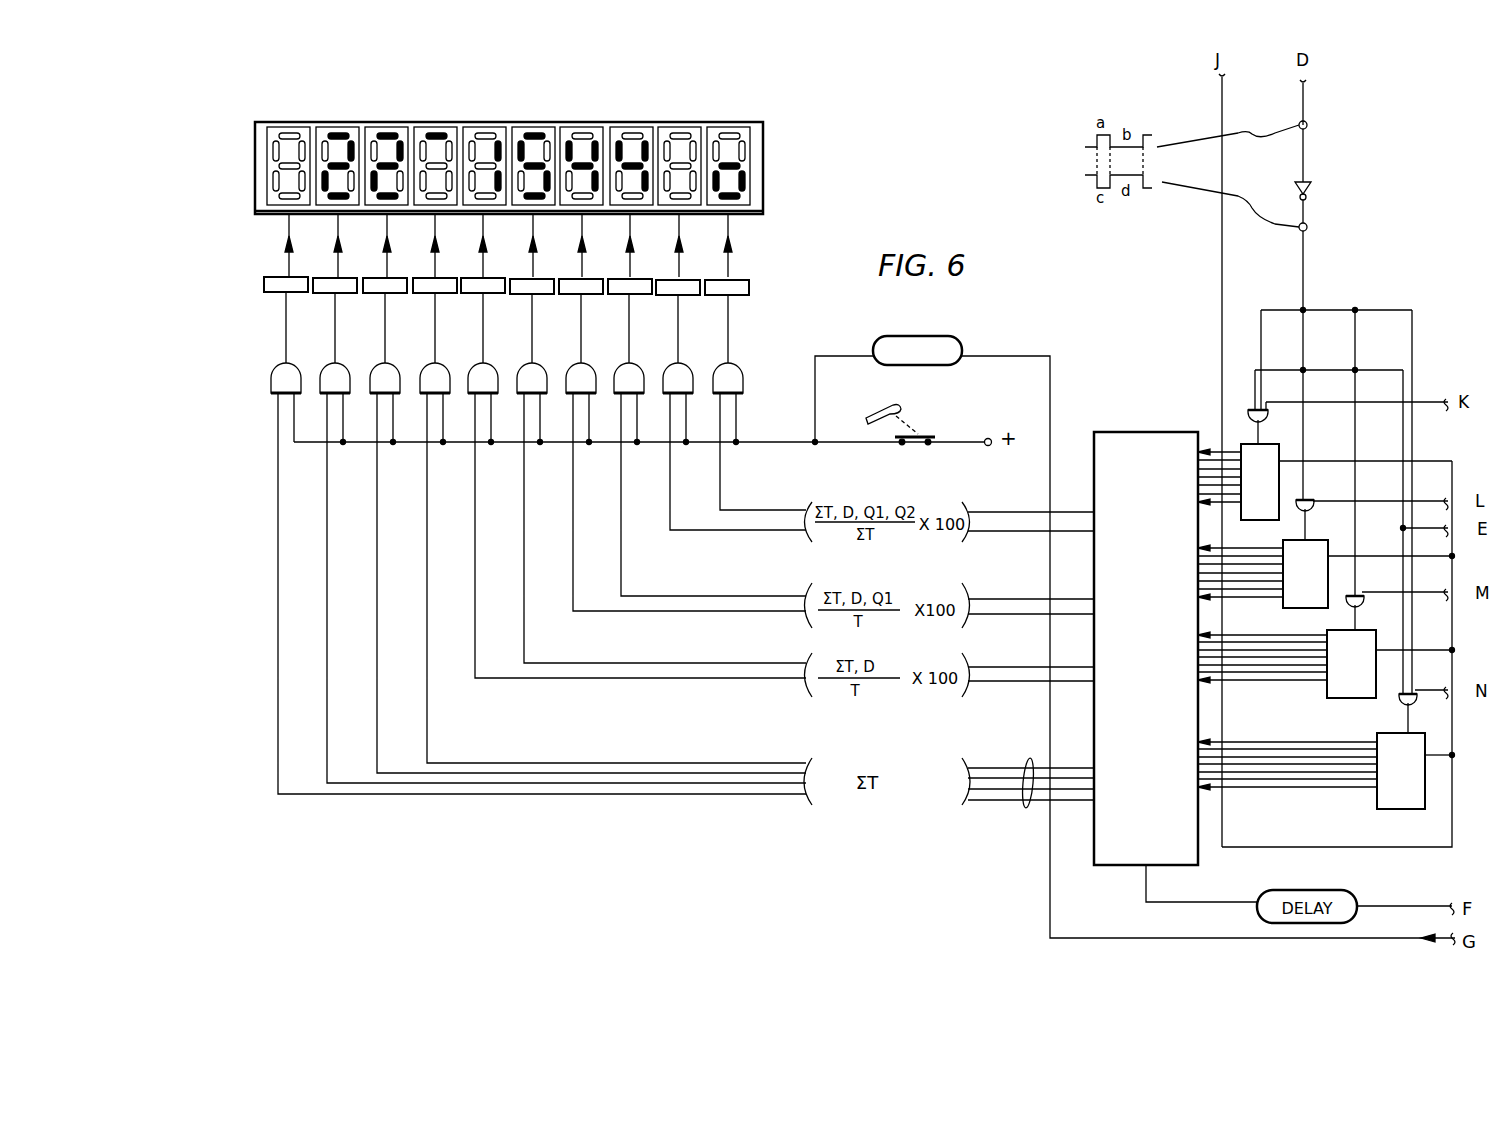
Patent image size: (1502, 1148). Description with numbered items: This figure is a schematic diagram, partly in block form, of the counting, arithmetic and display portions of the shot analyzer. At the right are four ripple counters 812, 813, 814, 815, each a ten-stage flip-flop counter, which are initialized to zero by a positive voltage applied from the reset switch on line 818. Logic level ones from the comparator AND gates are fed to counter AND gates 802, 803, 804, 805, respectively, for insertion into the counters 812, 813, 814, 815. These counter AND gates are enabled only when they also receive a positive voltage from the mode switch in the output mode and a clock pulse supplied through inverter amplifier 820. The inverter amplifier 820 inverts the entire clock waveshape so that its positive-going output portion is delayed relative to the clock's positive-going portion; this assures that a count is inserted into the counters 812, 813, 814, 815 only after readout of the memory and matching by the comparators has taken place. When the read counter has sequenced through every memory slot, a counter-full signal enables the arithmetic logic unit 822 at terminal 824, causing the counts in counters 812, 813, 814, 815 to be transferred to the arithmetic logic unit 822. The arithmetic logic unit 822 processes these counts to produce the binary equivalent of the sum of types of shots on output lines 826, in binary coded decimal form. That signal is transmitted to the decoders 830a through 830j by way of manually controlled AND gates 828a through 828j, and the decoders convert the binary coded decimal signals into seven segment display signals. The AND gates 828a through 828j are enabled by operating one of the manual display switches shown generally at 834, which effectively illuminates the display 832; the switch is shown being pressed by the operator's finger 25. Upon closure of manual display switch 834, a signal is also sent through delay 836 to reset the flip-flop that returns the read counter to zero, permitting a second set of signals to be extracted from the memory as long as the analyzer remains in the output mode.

The display 832 is at (516, 122).
The decoder 830a is at (298, 293).
The decoder 830j is at (749, 289).
The manually controlled AND gate 828a is at (286, 366).
The manually controlled AND gate 828j is at (741, 373).
The delay 836 is at (954, 336).
The operator finger 25 is at (882, 404).
The manual display switch 834 is at (923, 433).
The arithmetic logic unit 822 is at (1118, 432).
The output lines 826 is at (1029, 808).
The terminal 824 is at (1152, 882).
The inverter amplifier 820 is at (1313, 190).
The counter AND gate 802 is at (1248, 412).
The counter AND gate 803 is at (1313, 512).
The counter AND gate 804 is at (1362, 606).
The counter AND gate 805 is at (1411, 708).
The ripple counter 812 is at (1270, 520).
The ripple counter 813 is at (1290, 610).
The ripple counter 814 is at (1340, 700).
The ripple counter 815 is at (1375, 808).
The line 818 is at (1450, 816).